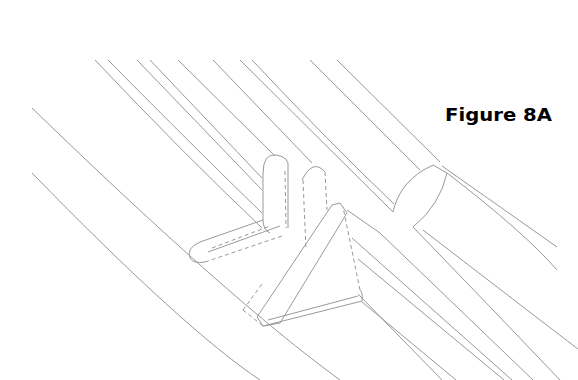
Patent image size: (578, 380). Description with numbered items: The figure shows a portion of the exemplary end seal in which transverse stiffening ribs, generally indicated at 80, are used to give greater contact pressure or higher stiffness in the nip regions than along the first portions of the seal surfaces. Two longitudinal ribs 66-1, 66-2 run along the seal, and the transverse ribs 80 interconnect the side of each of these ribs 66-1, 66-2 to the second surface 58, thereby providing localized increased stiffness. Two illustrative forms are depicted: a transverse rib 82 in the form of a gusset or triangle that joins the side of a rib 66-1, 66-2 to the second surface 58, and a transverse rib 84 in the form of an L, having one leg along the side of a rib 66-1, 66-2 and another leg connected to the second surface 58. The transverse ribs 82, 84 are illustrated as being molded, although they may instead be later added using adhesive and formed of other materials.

The rib 66-1 is at (226, 111).
The rib 66-2 is at (440, 163).
The second surface 58 is at (378, 370).
The transverse rib 80 is at (211, 300).
The transverse rib 82 is at (294, 288).
The transverse rib 84 is at (232, 232).